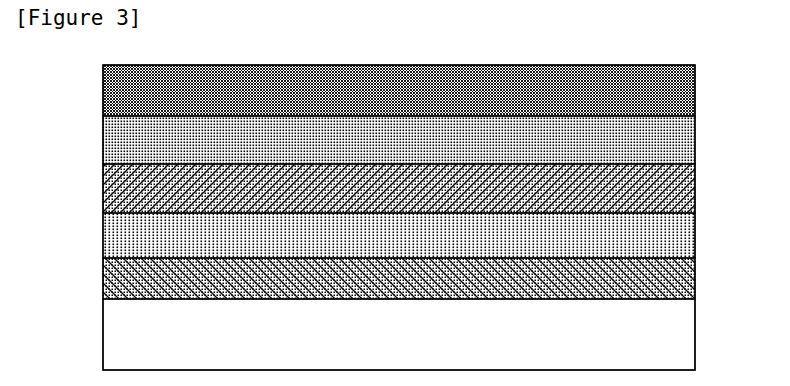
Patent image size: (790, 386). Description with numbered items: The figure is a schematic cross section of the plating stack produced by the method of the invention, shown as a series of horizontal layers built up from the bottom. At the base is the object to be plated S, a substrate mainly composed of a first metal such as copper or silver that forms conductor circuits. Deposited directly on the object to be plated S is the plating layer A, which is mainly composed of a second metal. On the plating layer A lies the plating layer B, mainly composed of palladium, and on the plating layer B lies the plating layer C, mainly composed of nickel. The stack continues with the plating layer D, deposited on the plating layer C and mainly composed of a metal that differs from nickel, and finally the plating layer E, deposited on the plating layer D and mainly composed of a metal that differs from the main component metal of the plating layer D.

The plating layer E is at (678, 97).
The plating layer D is at (678, 145).
The plating layer C is at (678, 192).
The plating layer B is at (678, 238).
The plating layer A is at (678, 281).
The object to be plated S is at (678, 333).